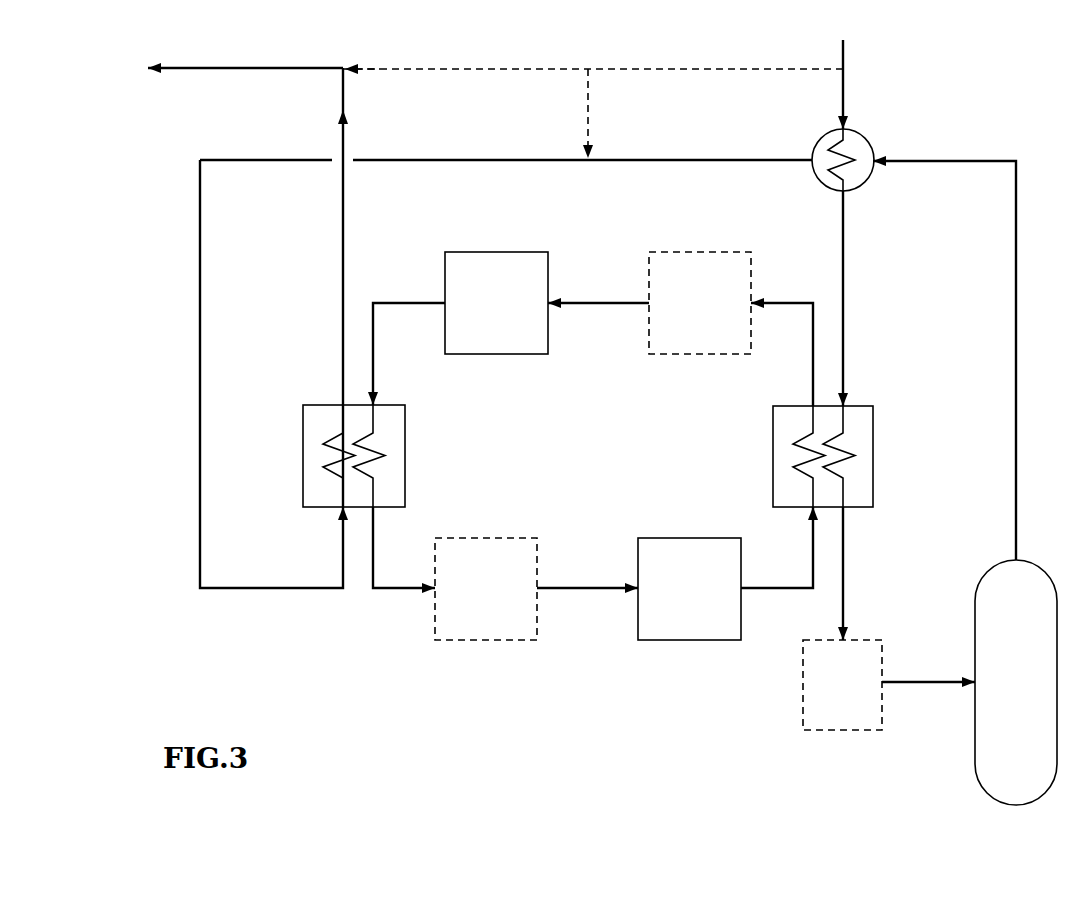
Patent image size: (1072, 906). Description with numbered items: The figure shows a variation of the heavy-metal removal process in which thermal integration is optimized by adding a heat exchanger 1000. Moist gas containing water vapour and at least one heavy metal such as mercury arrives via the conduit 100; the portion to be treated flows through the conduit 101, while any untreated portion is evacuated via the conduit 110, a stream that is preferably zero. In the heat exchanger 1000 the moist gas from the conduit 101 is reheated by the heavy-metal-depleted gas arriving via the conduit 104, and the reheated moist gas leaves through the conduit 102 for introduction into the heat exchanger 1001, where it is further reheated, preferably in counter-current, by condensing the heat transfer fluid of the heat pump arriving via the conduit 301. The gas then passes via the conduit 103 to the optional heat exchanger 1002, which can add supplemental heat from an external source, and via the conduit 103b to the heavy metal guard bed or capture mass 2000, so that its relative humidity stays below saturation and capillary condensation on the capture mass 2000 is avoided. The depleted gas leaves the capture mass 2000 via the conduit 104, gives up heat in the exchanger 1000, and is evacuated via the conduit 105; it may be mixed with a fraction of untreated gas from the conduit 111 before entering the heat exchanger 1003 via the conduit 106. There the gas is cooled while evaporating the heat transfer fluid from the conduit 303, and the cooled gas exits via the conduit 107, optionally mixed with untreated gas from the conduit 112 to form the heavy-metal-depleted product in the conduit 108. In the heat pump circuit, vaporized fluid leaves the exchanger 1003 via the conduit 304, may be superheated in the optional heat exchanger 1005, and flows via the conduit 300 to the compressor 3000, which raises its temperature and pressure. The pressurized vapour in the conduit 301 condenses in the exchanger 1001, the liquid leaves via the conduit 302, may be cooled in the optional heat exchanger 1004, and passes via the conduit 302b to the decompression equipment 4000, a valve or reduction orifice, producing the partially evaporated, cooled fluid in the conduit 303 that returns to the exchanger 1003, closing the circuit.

The conduit 100 is at (845, 52).
The conduit 101 is at (845, 90).
The conduit 102 is at (845, 272).
The conduit 103 is at (845, 575).
The conduit 103b is at (912, 678).
The conduit 104 is at (915, 160).
The conduit 105 is at (648, 159).
The conduit 106 is at (202, 244).
The conduit 107 is at (341, 276).
The conduit 108 is at (286, 69).
The conduit 110 is at (628, 68).
The conduit 111 is at (586, 100).
The conduit 112 is at (370, 68).
The conduit 300 is at (580, 589).
The conduit 301 is at (780, 589).
The conduit 302 is at (811, 302).
The conduit 302b is at (610, 290).
The conduit 303 is at (435, 302).
The conduit 304 is at (385, 589).
The heat exchanger 1000 is at (820, 183).
The heat exchanger 1001 is at (874, 440).
The heat exchanger 1002 is at (803, 718).
The heat exchanger 1003 is at (303, 440).
The heat exchanger 1004 is at (660, 354).
The heat exchanger 1005 is at (500, 536).
The capture mass 2000 is at (975, 708).
The compressor 3000 is at (682, 536).
The decompression equipment 4000 is at (465, 354).